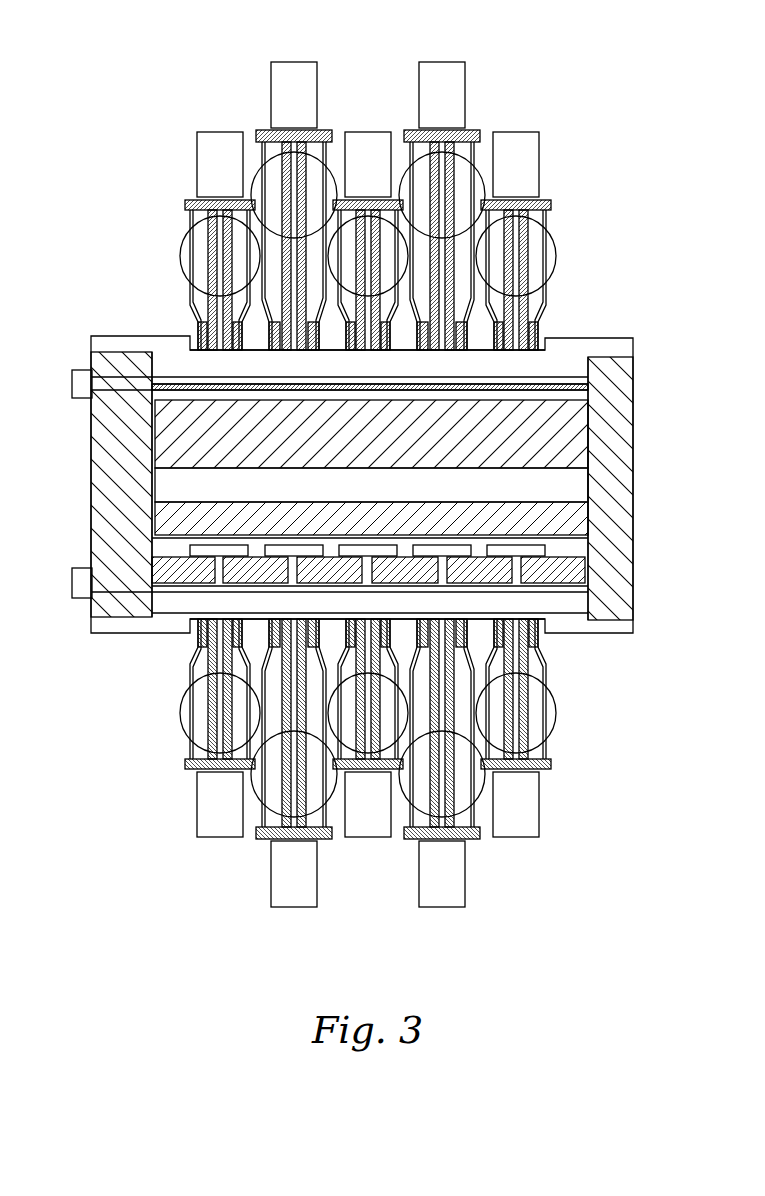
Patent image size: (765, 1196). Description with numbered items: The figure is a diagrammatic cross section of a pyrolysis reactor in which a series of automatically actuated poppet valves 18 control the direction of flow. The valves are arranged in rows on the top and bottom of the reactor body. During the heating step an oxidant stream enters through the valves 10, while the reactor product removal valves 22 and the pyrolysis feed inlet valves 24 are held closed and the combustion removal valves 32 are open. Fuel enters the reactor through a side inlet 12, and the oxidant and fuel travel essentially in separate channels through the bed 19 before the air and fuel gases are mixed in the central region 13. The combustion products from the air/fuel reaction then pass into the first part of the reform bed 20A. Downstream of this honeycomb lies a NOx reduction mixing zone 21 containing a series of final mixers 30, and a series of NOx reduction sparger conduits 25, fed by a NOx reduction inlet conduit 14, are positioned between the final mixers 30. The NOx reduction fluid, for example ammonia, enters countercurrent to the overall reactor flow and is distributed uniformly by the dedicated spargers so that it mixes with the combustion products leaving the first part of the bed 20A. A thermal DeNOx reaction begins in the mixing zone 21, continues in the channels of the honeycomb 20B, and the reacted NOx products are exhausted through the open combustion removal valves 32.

The oxidant inlet valve 10 is at (216, 131).
The reactor product removal valve 22 is at (294, 62).
The pyrolysis feed inlet valve 24 is at (215, 838).
The combustion removal valve 32 is at (294, 907).
The automatically actuated poppet valve 18 is at (205, 322).
The side inlet 12 is at (72, 377).
The bed 19 is at (150, 422).
The central region 13 is at (575, 488).
The first part of the reform bed 20A is at (160, 512).
The honeycomb 20B is at (173, 557).
The NOx reduction mixing zone 21 is at (575, 548).
The NOx reduction sparger conduit 25 is at (207, 557).
The final mixer 30 is at (580, 580).
The NOx reduction inlet conduit 14 is at (72, 585).